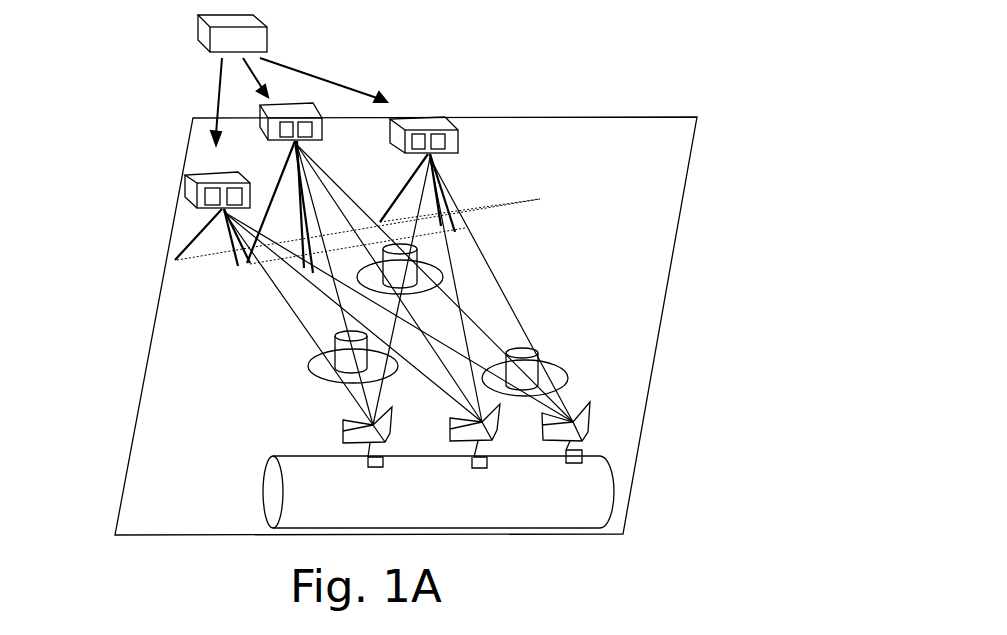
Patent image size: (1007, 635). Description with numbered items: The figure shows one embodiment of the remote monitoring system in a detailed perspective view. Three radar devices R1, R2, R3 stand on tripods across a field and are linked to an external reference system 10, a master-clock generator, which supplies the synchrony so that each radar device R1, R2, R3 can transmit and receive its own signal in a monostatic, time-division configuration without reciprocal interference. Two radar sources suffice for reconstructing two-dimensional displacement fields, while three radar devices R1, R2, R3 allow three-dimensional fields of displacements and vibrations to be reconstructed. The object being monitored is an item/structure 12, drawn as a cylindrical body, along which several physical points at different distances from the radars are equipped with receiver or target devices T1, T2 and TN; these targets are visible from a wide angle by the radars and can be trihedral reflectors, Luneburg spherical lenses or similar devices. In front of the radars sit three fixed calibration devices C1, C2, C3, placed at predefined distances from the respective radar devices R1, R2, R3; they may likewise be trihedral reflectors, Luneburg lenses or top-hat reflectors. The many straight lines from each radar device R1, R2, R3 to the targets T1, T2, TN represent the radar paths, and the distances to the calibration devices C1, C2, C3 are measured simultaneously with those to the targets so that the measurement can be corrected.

The external reference system 10 is at (199, 27).
The item/structure 12 is at (547, 513).
The radar device R1 is at (266, 137).
The radar device R2 is at (457, 133).
The radar device R3 is at (193, 193).
The fixed calibration device C1 is at (395, 247).
The fixed calibration device C2 is at (300, 360).
The fixed calibration device C3 is at (562, 370).
The transmitter N TN is at (390, 442).
The target device T2 is at (495, 443).
The target device T1 is at (555, 437).